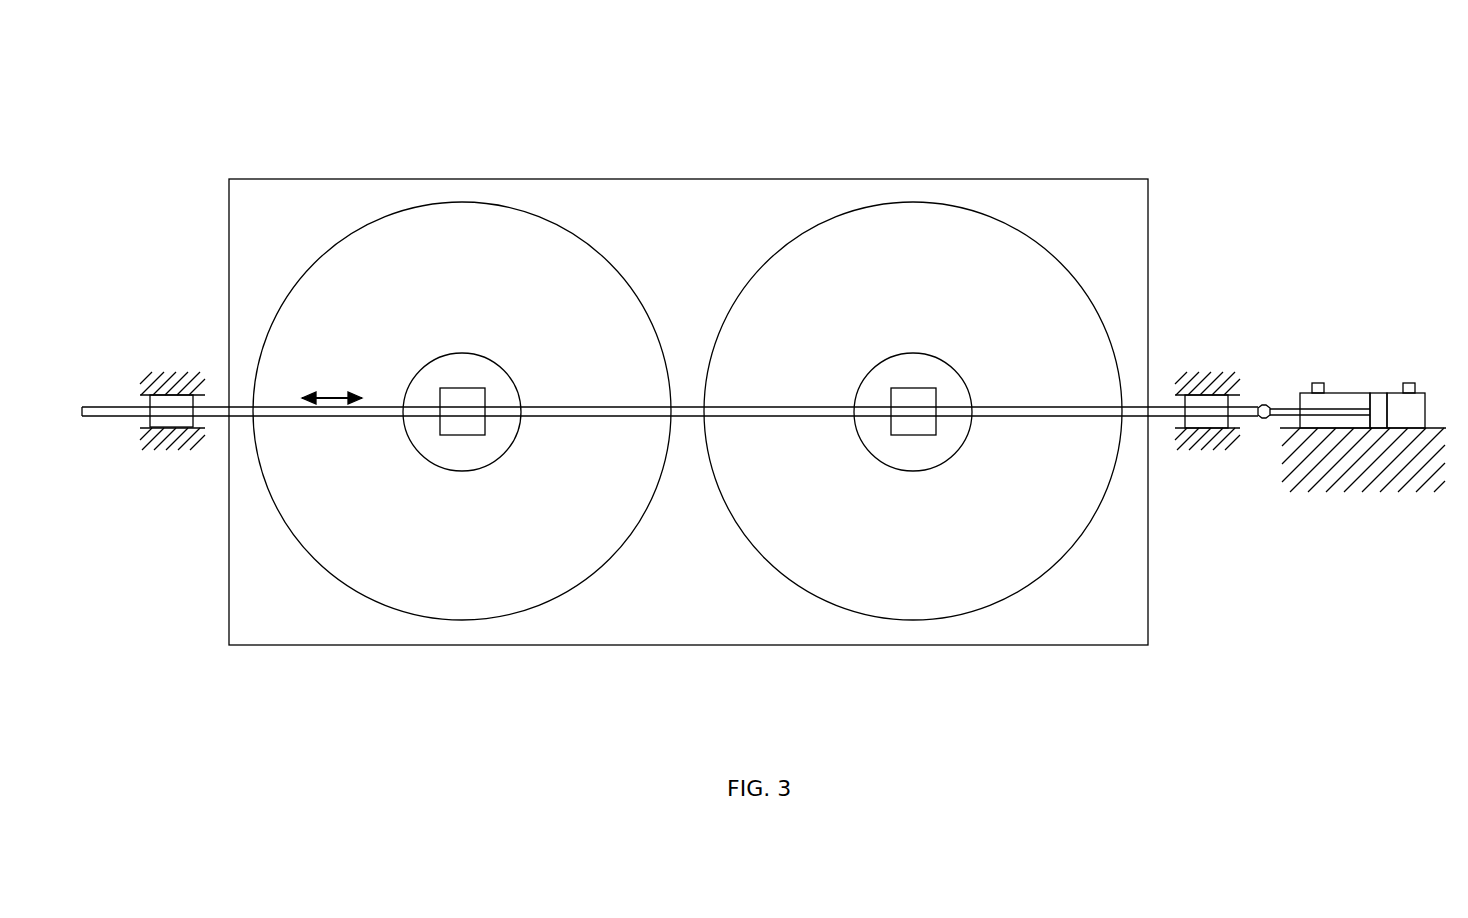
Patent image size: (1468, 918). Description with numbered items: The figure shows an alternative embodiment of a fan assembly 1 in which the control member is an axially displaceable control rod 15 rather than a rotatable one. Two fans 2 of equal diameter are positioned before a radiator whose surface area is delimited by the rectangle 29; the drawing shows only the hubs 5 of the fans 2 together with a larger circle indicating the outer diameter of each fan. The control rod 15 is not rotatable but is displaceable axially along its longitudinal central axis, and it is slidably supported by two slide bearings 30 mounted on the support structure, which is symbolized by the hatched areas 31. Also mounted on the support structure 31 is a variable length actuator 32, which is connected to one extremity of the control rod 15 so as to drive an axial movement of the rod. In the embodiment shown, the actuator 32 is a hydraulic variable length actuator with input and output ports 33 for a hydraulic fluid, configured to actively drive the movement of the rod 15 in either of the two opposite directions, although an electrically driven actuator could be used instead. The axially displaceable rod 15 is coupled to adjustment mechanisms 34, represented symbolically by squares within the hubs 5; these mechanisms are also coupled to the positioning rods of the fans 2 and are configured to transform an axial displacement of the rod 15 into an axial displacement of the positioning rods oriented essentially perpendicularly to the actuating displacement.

The assembly 1 is at (296, 124).
The fan 2 is at (447, 262).
The hub 5 is at (473, 370).
The control rod 15 is at (693, 408).
The rectangle 29 is at (1025, 178).
The slide bearing 30 is at (162, 402).
The support structure 31 is at (180, 378).
The variable length actuator 32 is at (1363, 393).
The input and output ports 33 is at (1325, 383).
The adjustment mechanism 34 is at (460, 417).